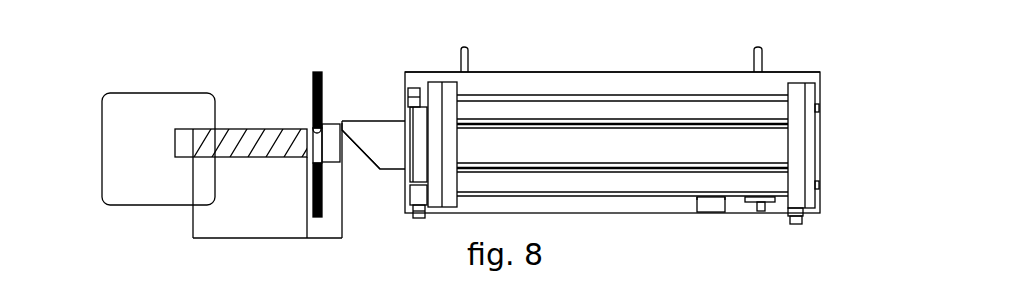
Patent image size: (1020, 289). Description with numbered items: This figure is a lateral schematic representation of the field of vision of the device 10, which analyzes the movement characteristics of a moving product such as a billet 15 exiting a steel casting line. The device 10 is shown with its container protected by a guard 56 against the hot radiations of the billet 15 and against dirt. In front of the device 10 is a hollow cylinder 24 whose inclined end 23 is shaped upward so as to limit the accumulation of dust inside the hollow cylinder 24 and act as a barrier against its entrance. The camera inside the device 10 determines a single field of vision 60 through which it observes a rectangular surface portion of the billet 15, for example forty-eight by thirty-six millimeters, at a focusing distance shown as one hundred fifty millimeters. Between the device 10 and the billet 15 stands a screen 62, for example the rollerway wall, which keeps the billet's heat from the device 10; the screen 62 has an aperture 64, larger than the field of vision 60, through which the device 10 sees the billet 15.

The device 10 is at (645, 45).
The billet 15 is at (137, 112).
The inclined end 23 is at (360, 160).
The hollow cylinder 24 is at (378, 128).
The guard 56 is at (508, 85).
The field of vision 60 is at (262, 112).
The screen 62 is at (320, 70).
The aperture 64 is at (321, 129).